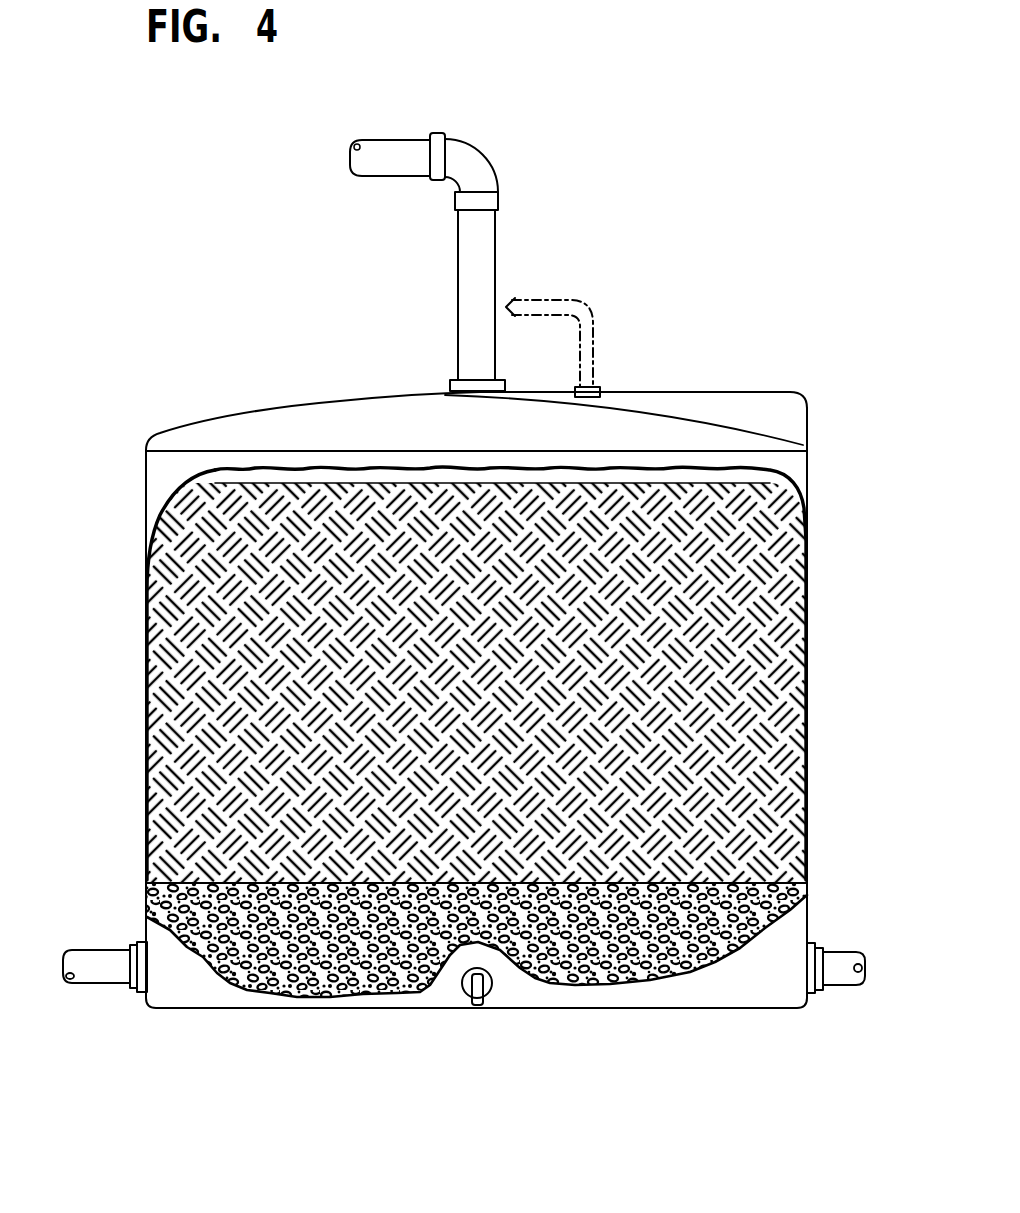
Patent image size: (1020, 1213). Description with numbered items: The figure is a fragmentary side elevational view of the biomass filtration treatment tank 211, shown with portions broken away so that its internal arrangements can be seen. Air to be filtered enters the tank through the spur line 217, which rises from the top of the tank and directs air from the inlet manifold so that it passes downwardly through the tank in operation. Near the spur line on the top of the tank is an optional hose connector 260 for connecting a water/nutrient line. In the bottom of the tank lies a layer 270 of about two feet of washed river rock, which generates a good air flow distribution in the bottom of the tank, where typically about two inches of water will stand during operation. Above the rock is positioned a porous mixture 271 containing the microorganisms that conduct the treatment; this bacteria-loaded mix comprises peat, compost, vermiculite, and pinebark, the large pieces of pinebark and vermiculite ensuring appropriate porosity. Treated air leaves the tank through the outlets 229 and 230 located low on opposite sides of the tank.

The treatment tank 211 is at (834, 591).
The spur line 217 is at (458, 262).
The outlet 229 is at (93, 952).
The outlet 230 is at (838, 954).
The hose connector 260 is at (604, 394).
The layer of washed river rock 270 is at (795, 890).
The porous mixture 271 is at (782, 704).